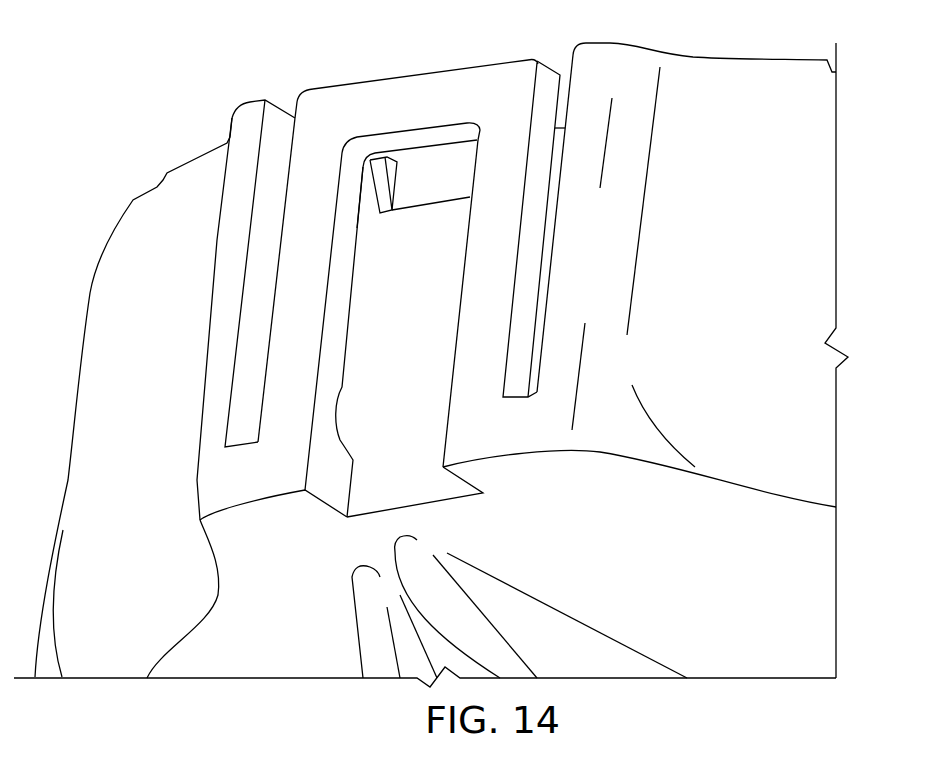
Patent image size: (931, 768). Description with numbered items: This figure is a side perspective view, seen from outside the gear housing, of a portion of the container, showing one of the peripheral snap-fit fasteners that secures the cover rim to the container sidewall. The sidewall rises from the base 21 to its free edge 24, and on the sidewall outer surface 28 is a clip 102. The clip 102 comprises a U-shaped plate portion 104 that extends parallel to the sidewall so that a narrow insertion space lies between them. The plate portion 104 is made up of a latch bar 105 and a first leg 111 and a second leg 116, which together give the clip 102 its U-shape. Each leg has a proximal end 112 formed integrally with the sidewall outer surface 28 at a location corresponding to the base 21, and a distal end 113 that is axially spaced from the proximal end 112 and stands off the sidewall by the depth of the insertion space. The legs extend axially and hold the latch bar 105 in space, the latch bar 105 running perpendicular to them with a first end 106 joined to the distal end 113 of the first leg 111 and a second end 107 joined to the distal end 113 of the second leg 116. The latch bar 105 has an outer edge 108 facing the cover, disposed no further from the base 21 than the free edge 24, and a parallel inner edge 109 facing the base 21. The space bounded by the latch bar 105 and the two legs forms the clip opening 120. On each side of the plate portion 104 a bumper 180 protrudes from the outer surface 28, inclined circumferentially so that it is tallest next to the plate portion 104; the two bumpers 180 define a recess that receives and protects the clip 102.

The base 21 is at (713, 564).
The sidewall free edge 24 is at (758, 58).
The sidewall outer surface 28 is at (805, 302).
The clip 102 is at (404, 267).
The U-shaped plate portion 104 is at (420, 127).
The latch bar 105 is at (404, 267).
The latch bar first end 106 is at (313, 107).
The latch bar second end 107 is at (520, 63).
The latch bar outer edge 108 is at (440, 67).
The latch bar inner edge 109 is at (462, 128).
The first leg 111 is at (320, 326).
The proximal end 112 is at (493, 450).
The distal end 113 is at (312, 133).
The second leg 116 is at (505, 309).
The clip opening 120 is at (330, 395).
The bumper 180 is at (208, 295).